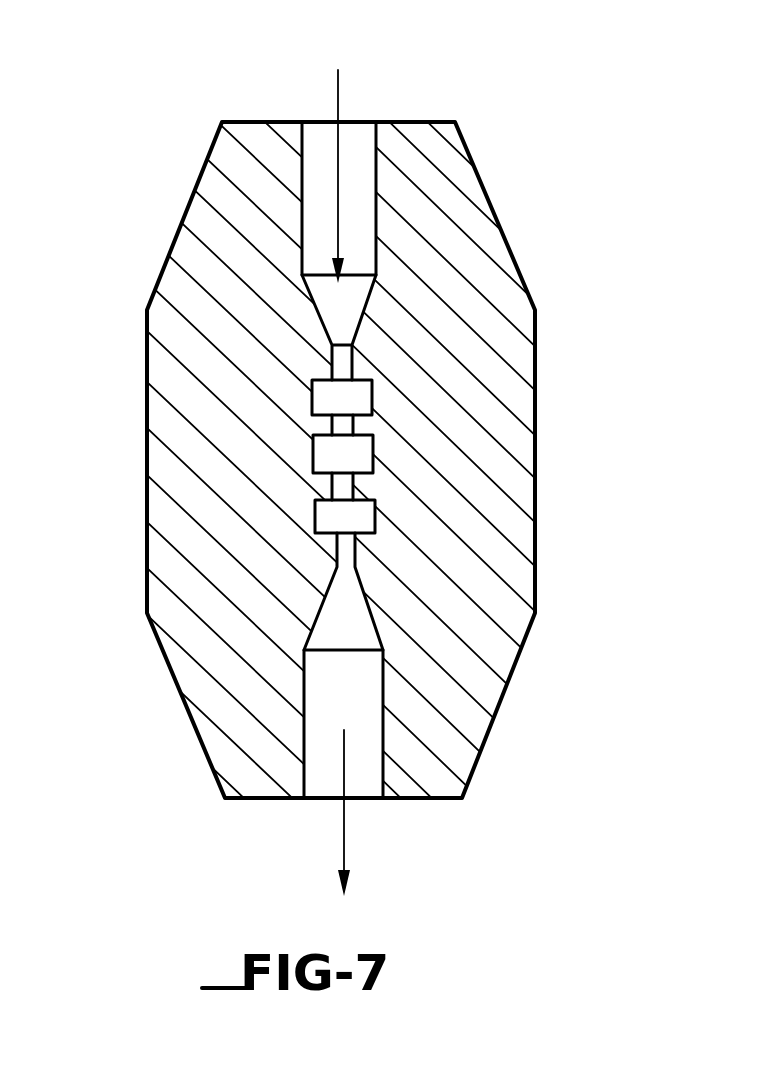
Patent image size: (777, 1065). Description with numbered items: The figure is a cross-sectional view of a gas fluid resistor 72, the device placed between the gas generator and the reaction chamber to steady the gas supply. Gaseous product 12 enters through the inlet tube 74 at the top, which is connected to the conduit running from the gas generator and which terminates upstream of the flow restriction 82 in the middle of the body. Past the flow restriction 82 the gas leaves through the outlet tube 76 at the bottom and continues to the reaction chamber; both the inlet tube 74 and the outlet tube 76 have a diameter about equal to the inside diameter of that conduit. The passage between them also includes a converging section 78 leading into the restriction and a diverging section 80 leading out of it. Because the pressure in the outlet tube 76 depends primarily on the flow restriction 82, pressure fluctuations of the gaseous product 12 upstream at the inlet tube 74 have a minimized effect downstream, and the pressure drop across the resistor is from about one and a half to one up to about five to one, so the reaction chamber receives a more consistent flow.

The gas fluid resistor 72 is at (134, 186).
The inlet tube 74 is at (358, 155).
The converging section 78 is at (348, 308).
The flow restriction 82 is at (357, 453).
The diverging section 80 is at (353, 622).
The outlet tube 76 is at (367, 758).
The gaseous product 12 is at (338, 83).